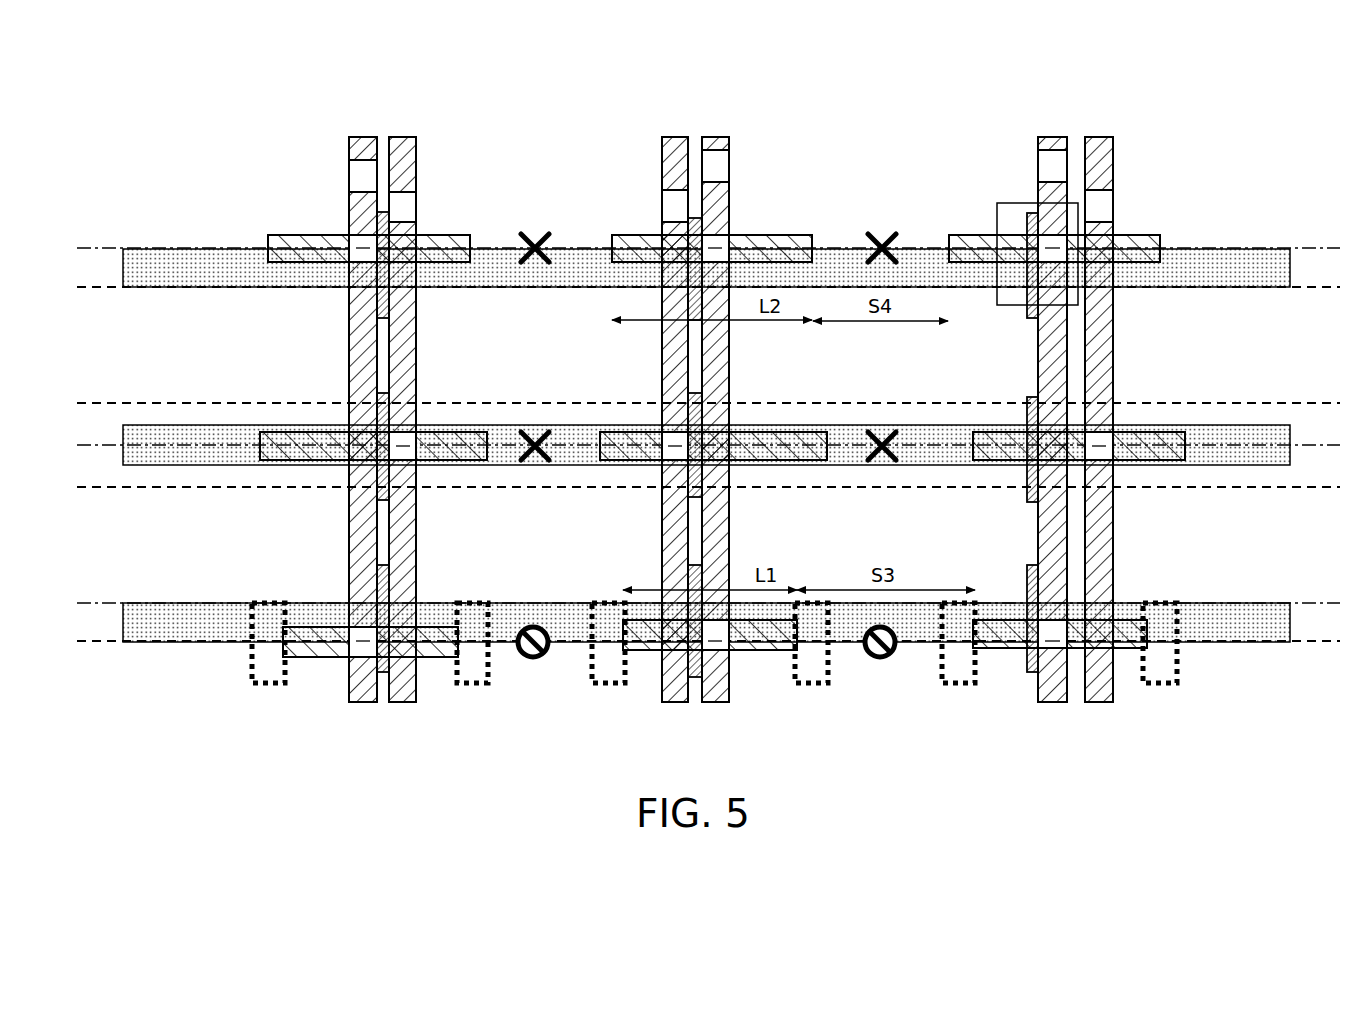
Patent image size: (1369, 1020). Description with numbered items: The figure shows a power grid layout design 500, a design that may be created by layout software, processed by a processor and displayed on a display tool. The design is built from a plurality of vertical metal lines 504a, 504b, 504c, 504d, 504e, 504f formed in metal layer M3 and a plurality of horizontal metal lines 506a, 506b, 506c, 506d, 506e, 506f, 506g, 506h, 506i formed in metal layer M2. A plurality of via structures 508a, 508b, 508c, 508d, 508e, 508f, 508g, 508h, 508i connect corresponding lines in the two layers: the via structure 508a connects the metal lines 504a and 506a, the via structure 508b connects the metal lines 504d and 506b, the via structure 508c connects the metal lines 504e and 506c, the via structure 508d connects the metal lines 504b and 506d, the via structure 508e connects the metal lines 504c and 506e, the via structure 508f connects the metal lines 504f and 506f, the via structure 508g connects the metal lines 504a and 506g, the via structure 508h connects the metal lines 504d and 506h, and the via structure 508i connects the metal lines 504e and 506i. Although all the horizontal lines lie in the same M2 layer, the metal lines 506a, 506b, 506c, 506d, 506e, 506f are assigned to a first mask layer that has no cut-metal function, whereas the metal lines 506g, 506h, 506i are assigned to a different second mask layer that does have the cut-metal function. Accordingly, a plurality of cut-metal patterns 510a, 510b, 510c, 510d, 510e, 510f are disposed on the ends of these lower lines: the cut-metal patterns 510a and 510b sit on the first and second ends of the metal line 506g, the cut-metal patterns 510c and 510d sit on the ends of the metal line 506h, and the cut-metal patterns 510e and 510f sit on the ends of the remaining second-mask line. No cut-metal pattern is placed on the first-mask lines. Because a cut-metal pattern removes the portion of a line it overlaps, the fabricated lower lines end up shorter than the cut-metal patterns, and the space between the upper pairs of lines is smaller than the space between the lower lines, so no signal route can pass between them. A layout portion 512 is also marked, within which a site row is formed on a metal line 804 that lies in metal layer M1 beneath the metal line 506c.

The power grid layout design 500 is at (128, 54).
The vertical metal line 504a is at (365, 137).
The vertical metal line 504b is at (402, 137).
The vertical metal line 504c is at (678, 137).
The vertical metal line 504d is at (715, 137).
The vertical metal line 504e is at (1054, 137).
The vertical metal line 504f is at (1098, 137).
The horizontal metal line 506a is at (285, 263).
The horizontal metal line 506b is at (628, 235).
The horizontal metal line 506c is at (1012, 240).
The horizontal metal line 506d is at (300, 438).
The horizontal metal line 506e is at (622, 438).
The horizontal metal line 506f is at (1000, 438).
The horizontal metal line 506g is at (320, 656).
The horizontal metal line 506h is at (637, 651).
The horizontal metal line 506i is at (992, 622).
The via structure 508a is at (358, 240).
The via structure 508b is at (712, 240).
The via structure 508c is at (1050, 262).
The via structure 508d is at (402, 460).
The via structure 508e is at (675, 460).
The via structure 508f is at (1099, 460).
The via structure 508g is at (363, 657).
The via structure 508h is at (715, 650).
The via structure 508i is at (1053, 648).
The cut-metal pattern 510a is at (268, 684).
The cut-metal pattern 510b is at (473, 684).
The cut-metal pattern 510c is at (602, 684).
The cut-metal pattern 510d is at (810, 684).
The cut-metal pattern 510e is at (958, 684).
The cut-metal pattern 510f is at (1160, 684).
The layout portion 512 is at (990, 228).
The metal line 804 is at (1032, 218).